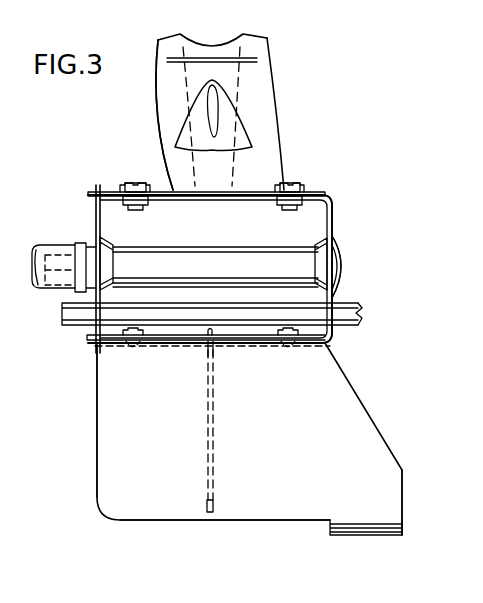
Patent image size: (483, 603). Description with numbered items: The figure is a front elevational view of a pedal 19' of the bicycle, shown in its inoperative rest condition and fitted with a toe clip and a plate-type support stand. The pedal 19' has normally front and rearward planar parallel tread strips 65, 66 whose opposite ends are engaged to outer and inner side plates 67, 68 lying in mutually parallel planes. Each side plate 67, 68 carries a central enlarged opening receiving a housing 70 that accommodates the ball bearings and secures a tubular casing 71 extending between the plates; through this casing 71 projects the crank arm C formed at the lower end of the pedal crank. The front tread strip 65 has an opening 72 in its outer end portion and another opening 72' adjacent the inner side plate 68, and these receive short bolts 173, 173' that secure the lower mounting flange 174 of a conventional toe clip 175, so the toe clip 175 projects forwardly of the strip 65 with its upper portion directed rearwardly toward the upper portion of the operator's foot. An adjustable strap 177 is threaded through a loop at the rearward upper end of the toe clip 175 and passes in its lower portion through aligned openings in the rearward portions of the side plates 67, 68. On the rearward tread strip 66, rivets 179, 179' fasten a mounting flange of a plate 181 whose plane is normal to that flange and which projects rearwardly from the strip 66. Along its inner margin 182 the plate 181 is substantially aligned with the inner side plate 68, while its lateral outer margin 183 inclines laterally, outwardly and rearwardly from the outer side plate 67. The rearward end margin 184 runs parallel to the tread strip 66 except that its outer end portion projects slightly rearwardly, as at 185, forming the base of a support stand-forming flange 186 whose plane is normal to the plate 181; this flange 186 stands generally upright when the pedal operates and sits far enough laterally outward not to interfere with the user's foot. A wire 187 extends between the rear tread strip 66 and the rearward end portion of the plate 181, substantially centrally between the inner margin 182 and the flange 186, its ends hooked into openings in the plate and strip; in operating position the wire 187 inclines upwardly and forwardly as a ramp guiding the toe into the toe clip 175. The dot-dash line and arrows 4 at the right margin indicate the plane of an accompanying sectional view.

The section line 4- 4 is at (427, 10).
The pedal 19' is at (258, 247).
The front tread strip 65 is at (322, 198).
The rearward tread strip 66 is at (362, 318).
The outer side plate 67 is at (335, 215).
The inner side plate 68 is at (95, 215).
The housings 70 is at (113, 245).
The tubular casing 71 is at (235, 265).
The opening 72 is at (313, 145).
The opening 72' is at (134, 142).
The short bolt 173 is at (309, 133).
The short bolt 173' is at (108, 165).
The lower mounting flange 174 is at (173, 188).
The toe clip 175 is at (270, 50).
The adjustable strap 177 is at (345, 302).
The rivet 179 is at (343, 356).
The rivet 179' is at (93, 362).
The plate 181 is at (175, 441).
The inner margin 182 is at (97, 478).
The lateral outer margin 183 is at (380, 430).
The rearward end margin 184 is at (245, 522).
The rearward projection 185 is at (405, 510).
The support stand-forming flange 186 is at (365, 535).
The wire 187 is at (209, 508).
The crank arm C is at (53, 290).